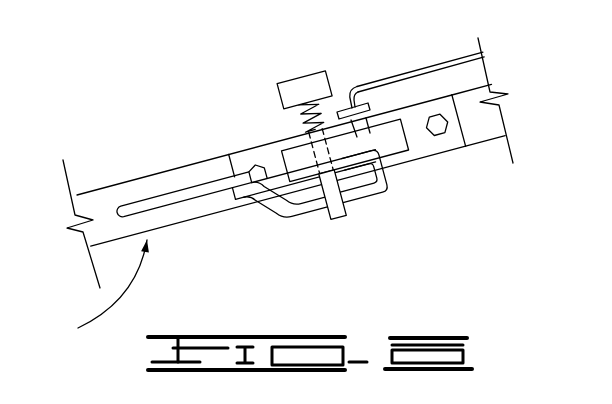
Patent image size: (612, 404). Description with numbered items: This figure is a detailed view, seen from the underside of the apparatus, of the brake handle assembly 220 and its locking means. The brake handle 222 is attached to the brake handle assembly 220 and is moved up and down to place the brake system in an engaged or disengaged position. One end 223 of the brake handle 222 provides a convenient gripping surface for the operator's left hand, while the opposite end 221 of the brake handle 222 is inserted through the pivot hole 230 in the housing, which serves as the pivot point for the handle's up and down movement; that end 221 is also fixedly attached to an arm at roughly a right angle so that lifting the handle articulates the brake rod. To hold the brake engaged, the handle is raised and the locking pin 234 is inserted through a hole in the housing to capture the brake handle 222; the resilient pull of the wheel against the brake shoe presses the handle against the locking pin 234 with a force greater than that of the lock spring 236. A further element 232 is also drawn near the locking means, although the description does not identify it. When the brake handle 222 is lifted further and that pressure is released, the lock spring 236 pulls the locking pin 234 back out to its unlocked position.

The brake handle assembly 220 is at (160, 80).
The end of brake handle 221 is at (372, 124).
The brake handle 222 is at (143, 207).
The end of brake handle 223 is at (93, 293).
The pivot hole 230 is at (409, 163).
The knob nut 232 is at (287, 80).
The locking pin 234 is at (334, 225).
The lock spring 236 is at (298, 131).